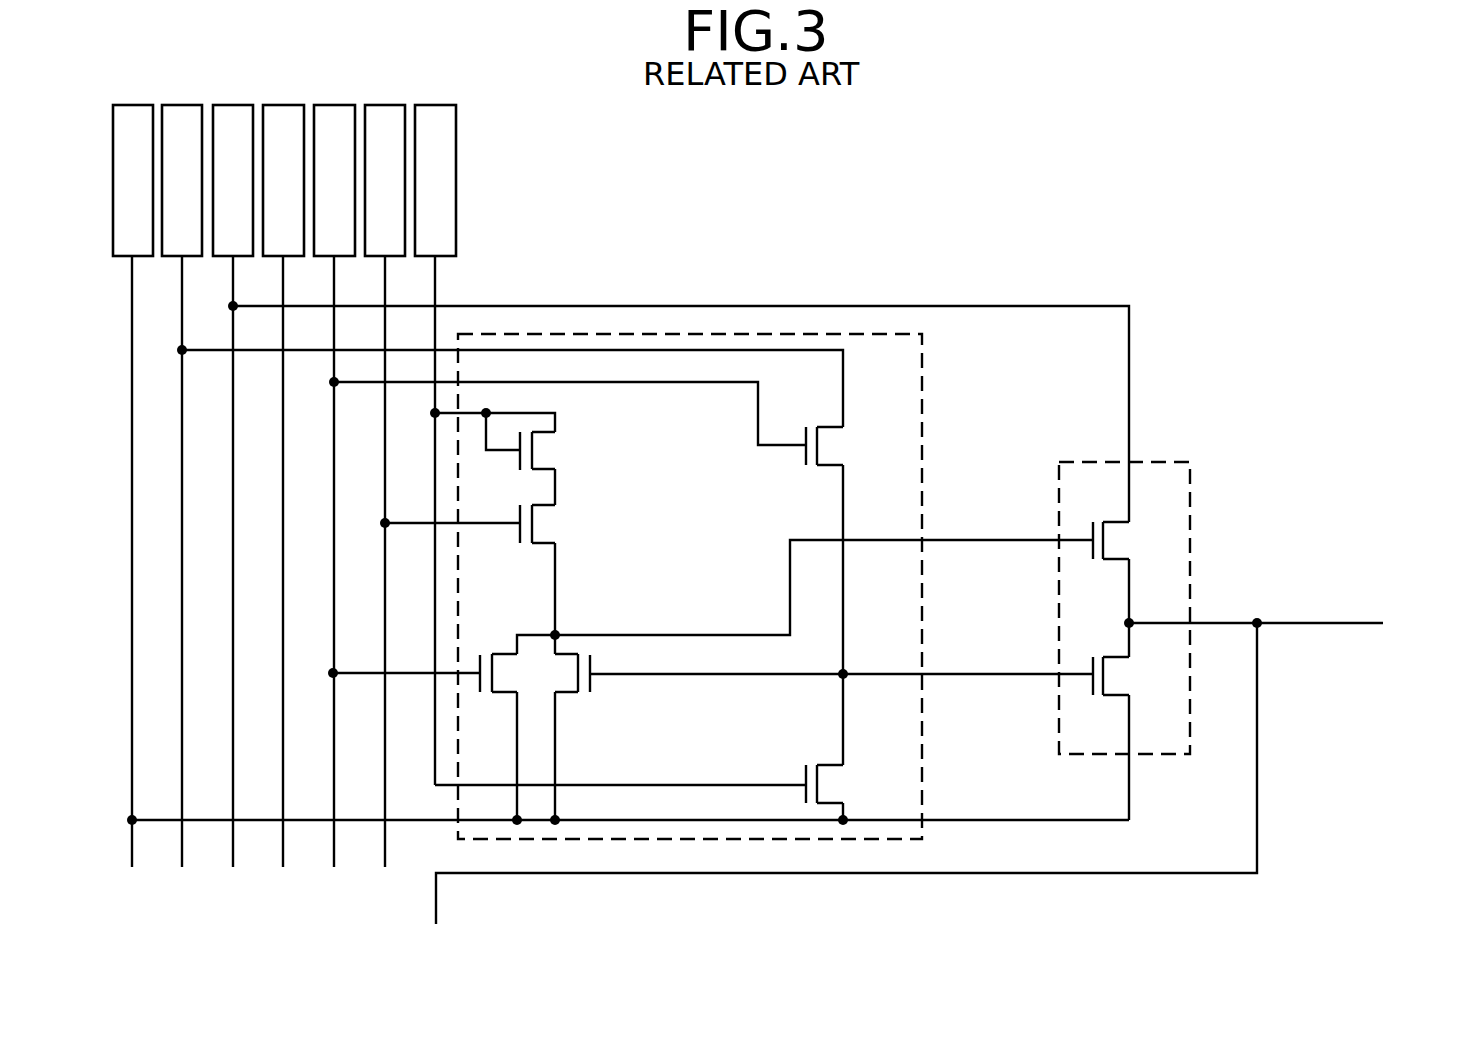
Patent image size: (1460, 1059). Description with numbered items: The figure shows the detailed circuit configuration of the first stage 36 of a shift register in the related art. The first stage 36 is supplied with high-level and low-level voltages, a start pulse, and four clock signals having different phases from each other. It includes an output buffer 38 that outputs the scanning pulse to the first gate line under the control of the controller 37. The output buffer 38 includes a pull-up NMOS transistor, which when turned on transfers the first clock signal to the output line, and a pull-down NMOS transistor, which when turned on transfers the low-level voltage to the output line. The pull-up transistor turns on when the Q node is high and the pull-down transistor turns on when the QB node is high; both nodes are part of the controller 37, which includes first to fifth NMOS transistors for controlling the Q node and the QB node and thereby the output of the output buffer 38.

The first stage 36 is at (1060, 261).
The controller 37 is at (712, 334).
The output buffer 38 is at (1192, 516).